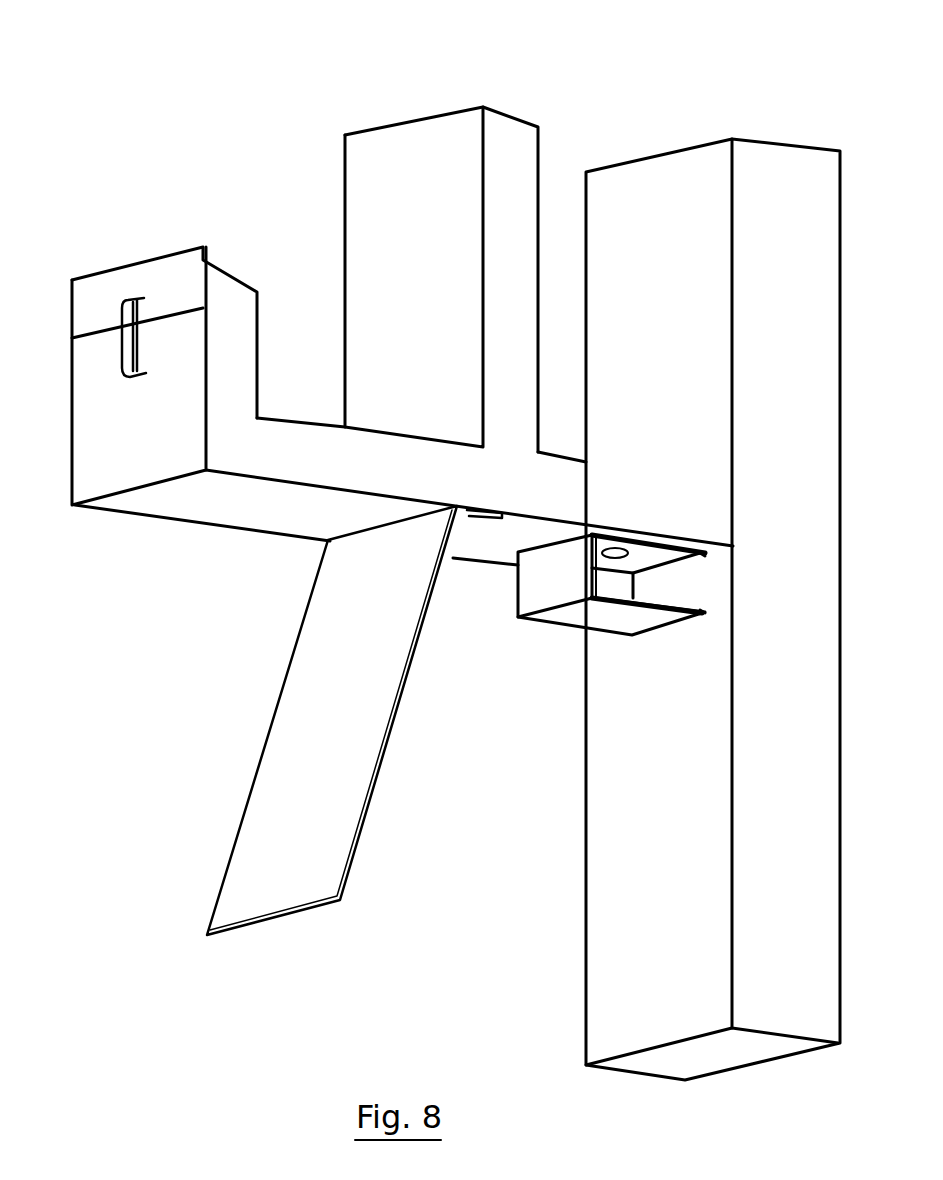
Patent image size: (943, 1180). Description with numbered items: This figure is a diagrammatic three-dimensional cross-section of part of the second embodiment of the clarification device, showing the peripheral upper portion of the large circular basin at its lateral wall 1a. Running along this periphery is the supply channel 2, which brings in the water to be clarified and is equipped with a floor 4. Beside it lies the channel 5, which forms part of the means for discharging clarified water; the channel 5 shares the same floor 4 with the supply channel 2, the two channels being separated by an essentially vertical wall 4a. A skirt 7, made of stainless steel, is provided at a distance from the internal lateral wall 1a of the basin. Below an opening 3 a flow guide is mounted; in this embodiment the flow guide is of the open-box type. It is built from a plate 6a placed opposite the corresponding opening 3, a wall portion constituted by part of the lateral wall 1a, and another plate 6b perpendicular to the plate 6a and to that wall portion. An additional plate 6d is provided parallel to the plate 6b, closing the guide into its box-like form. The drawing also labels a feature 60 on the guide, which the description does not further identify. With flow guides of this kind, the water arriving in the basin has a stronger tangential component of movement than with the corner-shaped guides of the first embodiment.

The lateral wall 1a is at (796, 226).
The supply channel 2 is at (560, 368).
The opening 3 is at (615, 550).
The floor 4 is at (235, 458).
The vertical wall 4a is at (343, 197).
The channel 5 is at (304, 344).
The plate 6a is at (570, 624).
The plate 6b is at (667, 588).
The additional plate 6d is at (520, 593).
The rib 60 is at (623, 588).
The skirt 7 is at (367, 828).